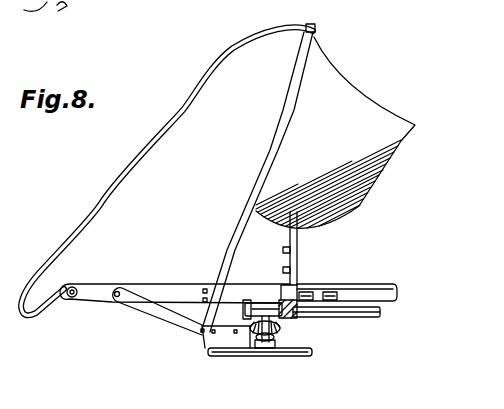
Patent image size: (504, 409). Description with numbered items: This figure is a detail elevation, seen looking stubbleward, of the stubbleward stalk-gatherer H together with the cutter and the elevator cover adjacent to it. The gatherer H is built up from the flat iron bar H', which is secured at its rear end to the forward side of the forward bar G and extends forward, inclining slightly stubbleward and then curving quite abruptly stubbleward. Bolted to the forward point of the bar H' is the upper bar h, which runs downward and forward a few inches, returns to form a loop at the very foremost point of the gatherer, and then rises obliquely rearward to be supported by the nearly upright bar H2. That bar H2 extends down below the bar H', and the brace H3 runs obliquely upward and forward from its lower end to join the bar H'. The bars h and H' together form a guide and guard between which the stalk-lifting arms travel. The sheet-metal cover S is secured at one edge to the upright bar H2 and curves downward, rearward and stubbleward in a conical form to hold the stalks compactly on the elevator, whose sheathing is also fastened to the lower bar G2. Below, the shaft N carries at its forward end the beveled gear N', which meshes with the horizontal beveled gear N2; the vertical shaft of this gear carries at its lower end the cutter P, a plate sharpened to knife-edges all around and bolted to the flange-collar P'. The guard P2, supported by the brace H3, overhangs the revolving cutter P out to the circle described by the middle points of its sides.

The stubbleward stalk-gatherer H is at (168, 169).
The bar h is at (125, 172).
The upright bar H2 is at (268, 158).
The flat iron bar H' is at (175, 273).
The brace H3 is at (163, 317).
The cover S is at (335, 132).
The bar G is at (297, 248).
The lower bar G2 is at (377, 287).
The shaft N is at (336, 331).
The beveled gear N' is at (274, 274).
The horizontal beveled gear N2 is at (238, 303).
The flange-collar P' is at (283, 334).
The guard P2 is at (218, 340).
The cutter P is at (260, 376).